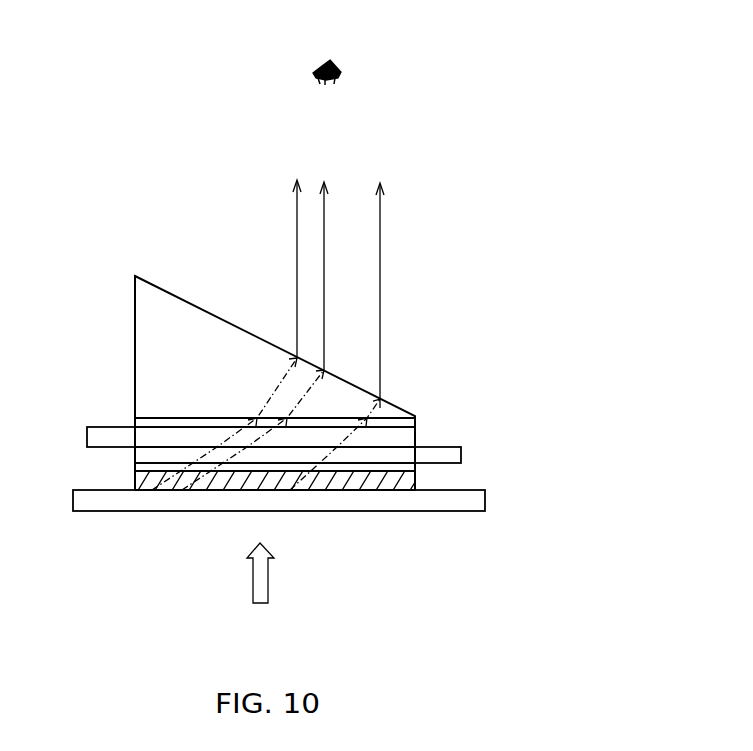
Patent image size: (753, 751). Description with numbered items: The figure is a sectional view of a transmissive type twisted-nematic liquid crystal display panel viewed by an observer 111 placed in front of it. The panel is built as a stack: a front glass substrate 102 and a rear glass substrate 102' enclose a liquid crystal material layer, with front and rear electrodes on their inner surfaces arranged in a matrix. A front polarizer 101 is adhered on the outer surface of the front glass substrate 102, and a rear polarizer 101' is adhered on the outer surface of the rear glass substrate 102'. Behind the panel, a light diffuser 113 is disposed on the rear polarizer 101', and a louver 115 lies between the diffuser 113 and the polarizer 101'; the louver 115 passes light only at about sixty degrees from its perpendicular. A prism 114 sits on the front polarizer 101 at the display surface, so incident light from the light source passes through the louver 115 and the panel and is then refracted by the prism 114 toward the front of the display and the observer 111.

The observer 111 is at (338, 67).
The prism 114 is at (148, 313).
The front polarizer 101 is at (226, 410).
The front glass substrate 102 is at (216, 434).
The rear glass substrate 102' is at (239, 455).
The rear polarizer 101' is at (213, 478).
The louver 115 is at (412, 484).
The light diffuser 113 is at (475, 502).